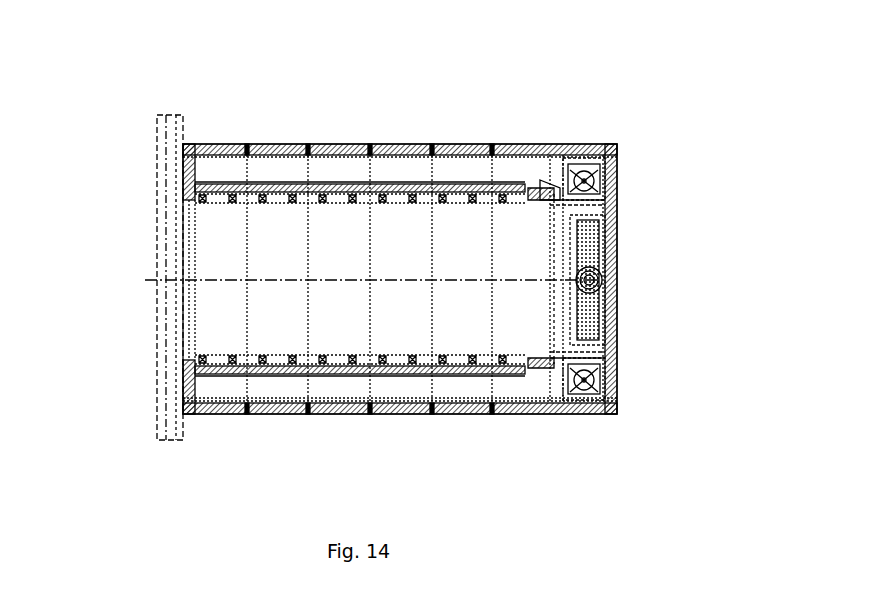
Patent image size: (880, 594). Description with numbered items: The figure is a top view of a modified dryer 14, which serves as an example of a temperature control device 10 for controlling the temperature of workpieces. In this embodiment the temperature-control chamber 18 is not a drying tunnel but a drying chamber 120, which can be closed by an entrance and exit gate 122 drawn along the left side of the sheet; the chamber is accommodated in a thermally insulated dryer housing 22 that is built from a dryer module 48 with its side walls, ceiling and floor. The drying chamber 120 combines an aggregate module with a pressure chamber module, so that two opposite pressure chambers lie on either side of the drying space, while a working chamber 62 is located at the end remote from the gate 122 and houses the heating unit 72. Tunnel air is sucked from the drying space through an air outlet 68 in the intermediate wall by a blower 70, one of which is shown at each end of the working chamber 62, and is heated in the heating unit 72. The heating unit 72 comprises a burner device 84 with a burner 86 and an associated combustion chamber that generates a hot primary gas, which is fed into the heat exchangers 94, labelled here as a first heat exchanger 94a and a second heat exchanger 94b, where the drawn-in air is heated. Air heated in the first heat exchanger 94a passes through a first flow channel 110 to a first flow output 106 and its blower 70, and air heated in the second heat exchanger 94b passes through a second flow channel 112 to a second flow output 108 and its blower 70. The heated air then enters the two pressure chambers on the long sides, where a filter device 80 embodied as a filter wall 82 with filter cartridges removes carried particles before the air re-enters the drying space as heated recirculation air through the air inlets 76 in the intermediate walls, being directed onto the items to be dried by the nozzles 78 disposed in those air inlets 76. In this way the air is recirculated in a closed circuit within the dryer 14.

The temperature control device 10 is at (622, 88).
The dryer 14 is at (668, 114).
The temperature-control chamber 18 is at (272, 335).
The dryer housing 22 is at (205, 143).
The dryer module 48 is at (217, 422).
The working chamber 62 is at (279, 168).
The air outlet 68 is at (553, 278).
The blower 70 is at (601, 178).
The heating unit 72 is at (620, 256).
The air inlet 76 is at (263, 202).
The nozzle 78 is at (263, 202).
The filter device 80 is at (348, 178).
The filter wall 82 is at (394, 186).
The burner device 84 is at (606, 286).
The burner 86 is at (600, 296).
The heat exchanger 94 is at (575, 316).
The first heat exchanger 94a is at (577, 235).
The second heat exchanger 94b is at (577, 300).
The first flow output 106 is at (563, 162).
The second flow output 108 is at (563, 395).
The first flow channel 110 is at (603, 206).
The second flow channel 112 is at (603, 347).
The drying chamber 120 is at (324, 400).
The entrance and exit gate 122 is at (156, 143).